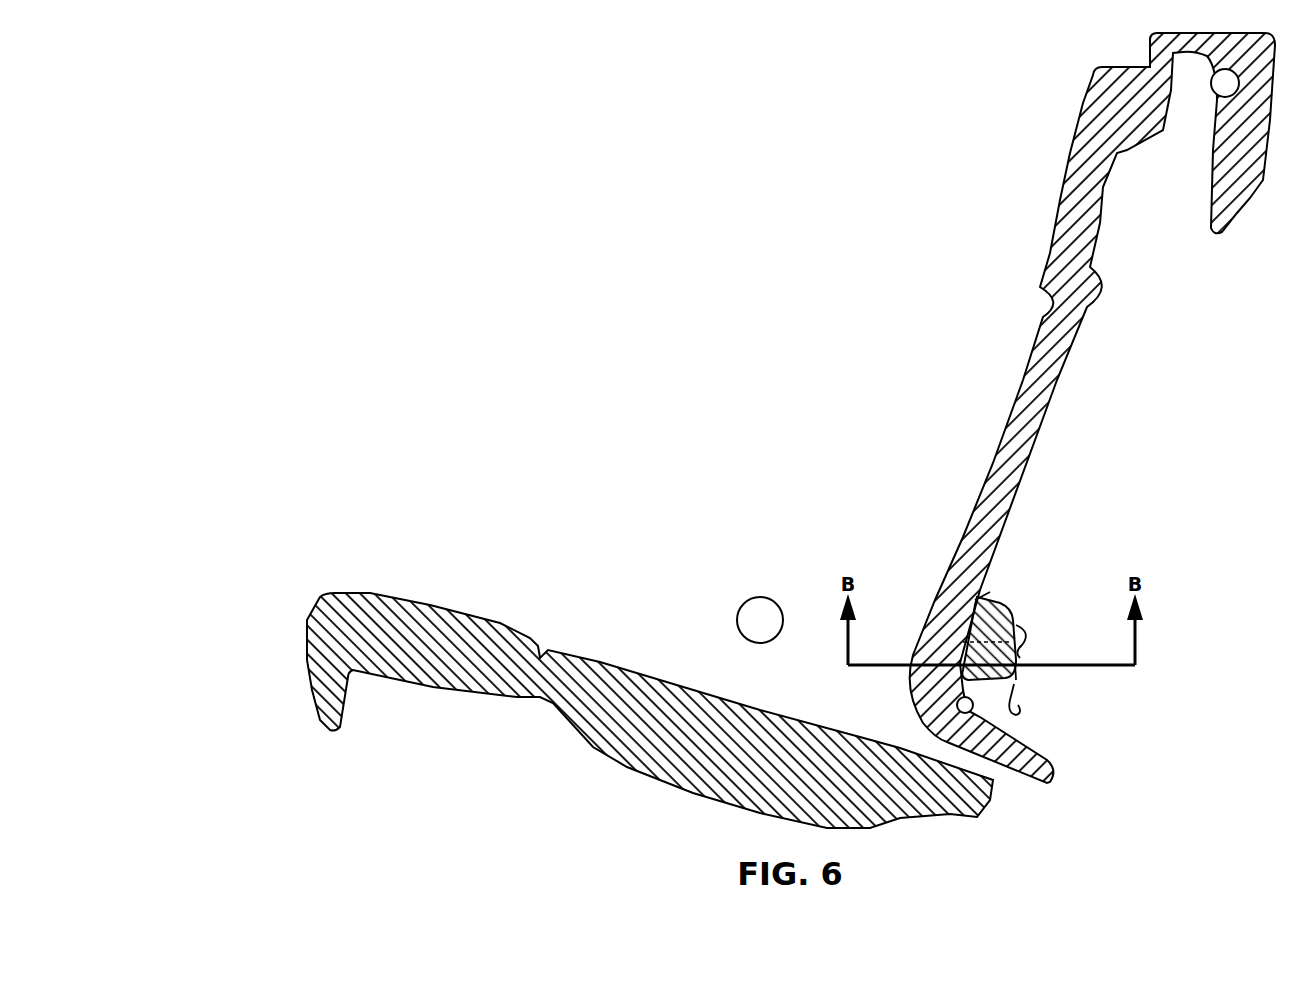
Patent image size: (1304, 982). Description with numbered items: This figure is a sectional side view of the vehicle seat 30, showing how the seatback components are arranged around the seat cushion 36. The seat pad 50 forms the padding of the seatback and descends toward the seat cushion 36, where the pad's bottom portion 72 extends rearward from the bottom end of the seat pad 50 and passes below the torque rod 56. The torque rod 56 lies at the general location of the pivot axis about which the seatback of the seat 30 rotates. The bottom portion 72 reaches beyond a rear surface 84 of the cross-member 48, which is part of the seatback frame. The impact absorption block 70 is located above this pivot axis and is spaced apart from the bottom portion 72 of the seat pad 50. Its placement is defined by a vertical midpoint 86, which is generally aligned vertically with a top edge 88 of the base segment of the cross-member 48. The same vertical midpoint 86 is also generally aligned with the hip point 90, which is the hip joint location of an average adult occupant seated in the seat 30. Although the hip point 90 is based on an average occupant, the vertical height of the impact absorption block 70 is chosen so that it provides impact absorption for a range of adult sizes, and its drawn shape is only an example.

The vehicle seat 30 is at (745, 361).
The seat cushion 36 is at (307, 622).
The cross-member 48 is at (1013, 703).
The seat pad 50 is at (1065, 180).
The torque rod 56 is at (973, 713).
The impact absorption block 70 is at (990, 591).
The bottom portion 72 is at (1019, 800).
The rear surface 84 is at (1017, 678).
The vertical midpoint 86 is at (1020, 600).
The top edge 88 is at (1025, 640).
The hip point 90 is at (746, 599).